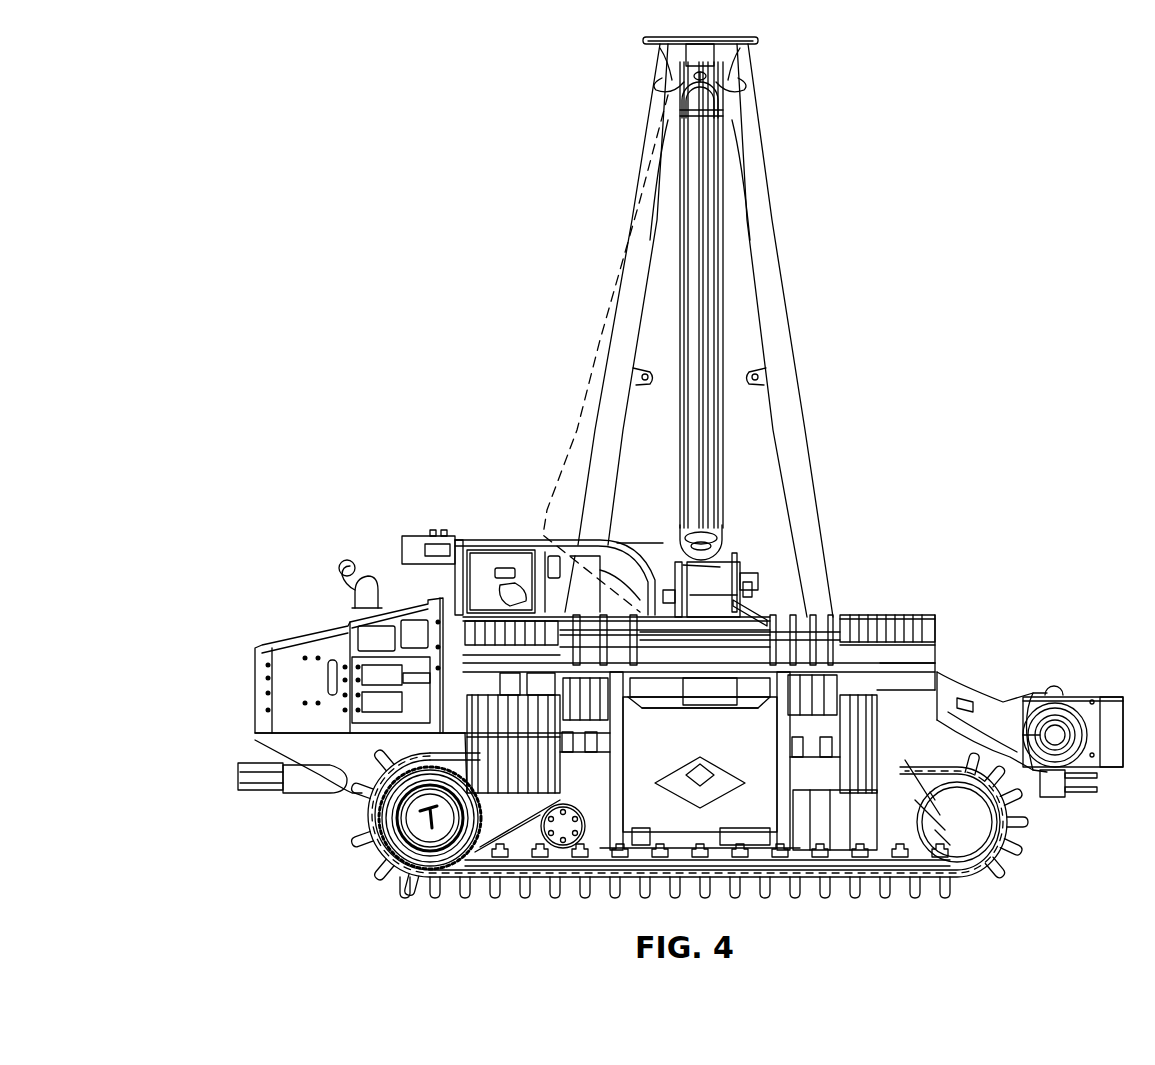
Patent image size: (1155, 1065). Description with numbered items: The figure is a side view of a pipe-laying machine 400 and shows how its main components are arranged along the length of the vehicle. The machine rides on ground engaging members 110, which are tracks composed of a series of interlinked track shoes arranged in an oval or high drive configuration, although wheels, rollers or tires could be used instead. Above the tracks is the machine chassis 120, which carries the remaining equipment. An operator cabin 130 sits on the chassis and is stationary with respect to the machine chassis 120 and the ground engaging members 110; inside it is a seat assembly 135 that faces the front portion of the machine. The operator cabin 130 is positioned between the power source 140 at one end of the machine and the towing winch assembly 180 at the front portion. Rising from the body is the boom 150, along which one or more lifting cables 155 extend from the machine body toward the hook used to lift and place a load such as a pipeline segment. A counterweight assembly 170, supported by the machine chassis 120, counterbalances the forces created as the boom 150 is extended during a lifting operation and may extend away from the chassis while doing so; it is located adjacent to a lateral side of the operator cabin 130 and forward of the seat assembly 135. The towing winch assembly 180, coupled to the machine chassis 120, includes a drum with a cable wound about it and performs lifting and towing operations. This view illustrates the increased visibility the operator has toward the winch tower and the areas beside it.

The drilling system 400 is at (183, 60).
The ground engaging members 110 is at (345, 808).
The machine chassis 120 is at (1033, 805).
The operator cabin 130 is at (478, 525).
The seat assembly 135 is at (508, 568).
The power source 140 is at (265, 650).
The boom 150 is at (787, 373).
The lifting cables 155 is at (703, 220).
The counterweight assembly 170 is at (913, 618).
The towing winch assembly 180 is at (1093, 700).